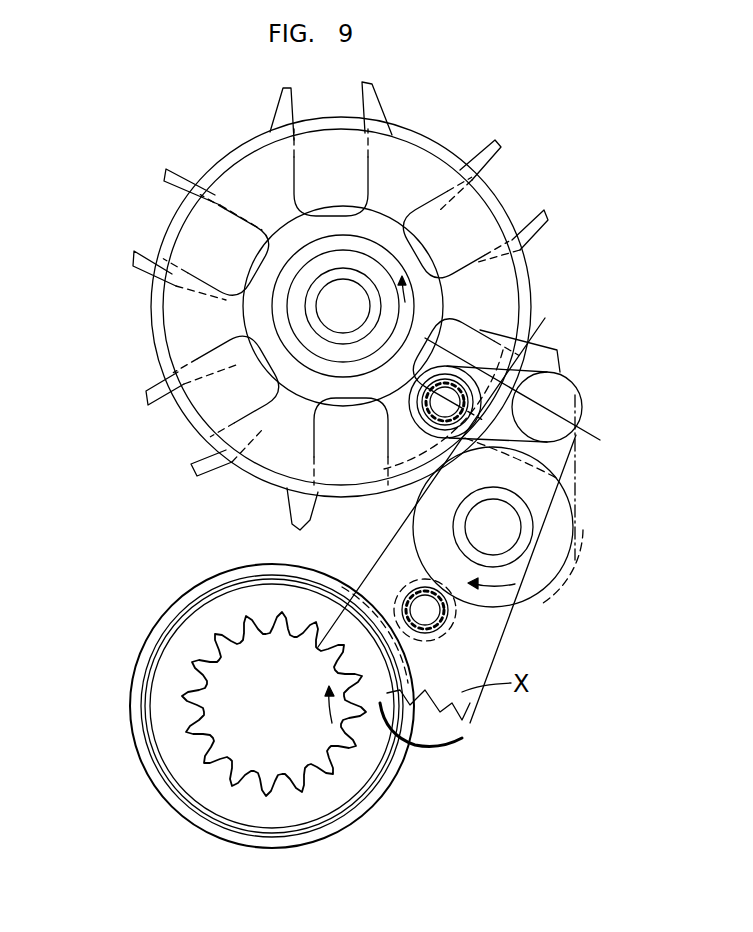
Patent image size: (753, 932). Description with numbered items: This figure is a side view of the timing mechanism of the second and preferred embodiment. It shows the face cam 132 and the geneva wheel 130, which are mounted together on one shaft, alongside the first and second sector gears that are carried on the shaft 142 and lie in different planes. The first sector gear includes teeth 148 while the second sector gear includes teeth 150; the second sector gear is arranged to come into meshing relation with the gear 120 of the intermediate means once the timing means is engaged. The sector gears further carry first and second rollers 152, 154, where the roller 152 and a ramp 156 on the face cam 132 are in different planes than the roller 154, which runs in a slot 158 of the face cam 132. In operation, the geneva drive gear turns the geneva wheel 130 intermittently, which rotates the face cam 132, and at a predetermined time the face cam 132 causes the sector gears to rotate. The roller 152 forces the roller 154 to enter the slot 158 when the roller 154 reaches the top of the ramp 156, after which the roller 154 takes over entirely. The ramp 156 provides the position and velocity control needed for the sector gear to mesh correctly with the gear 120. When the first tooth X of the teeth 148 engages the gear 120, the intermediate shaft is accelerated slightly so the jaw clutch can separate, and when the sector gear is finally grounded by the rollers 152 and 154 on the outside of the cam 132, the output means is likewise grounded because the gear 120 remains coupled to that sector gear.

The geneva wheel 130 is at (371, 289).
The face cam 132 is at (498, 213).
The second roller 154 is at (483, 452).
The slot 158 is at (516, 492).
The shaft 142 is at (497, 530).
The first roller 152 is at (430, 617).
The teeth 150 is at (262, 562).
The gear 120 is at (222, 708).
The teeth 148 is at (408, 757).
The ramp 156 is at (293, 512).